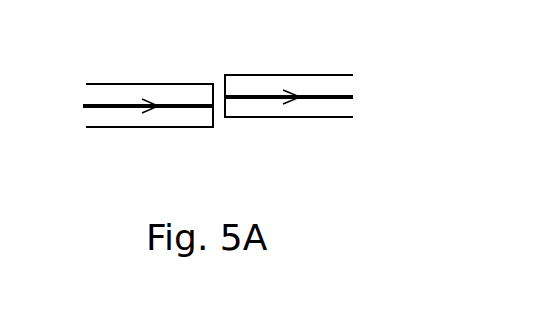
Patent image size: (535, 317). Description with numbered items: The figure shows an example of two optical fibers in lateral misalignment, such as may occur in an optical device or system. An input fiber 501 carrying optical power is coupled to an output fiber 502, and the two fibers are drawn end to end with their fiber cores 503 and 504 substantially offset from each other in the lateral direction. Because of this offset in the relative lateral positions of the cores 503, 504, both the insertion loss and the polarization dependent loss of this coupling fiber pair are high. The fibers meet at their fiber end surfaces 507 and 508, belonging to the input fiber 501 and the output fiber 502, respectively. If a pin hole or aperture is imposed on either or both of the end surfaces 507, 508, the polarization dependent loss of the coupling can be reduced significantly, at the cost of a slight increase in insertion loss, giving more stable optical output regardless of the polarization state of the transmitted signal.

The input fiber 501 is at (93, 82).
The output fiber 502 is at (277, 73).
The fiber core 503 is at (173, 102).
The fiber core 504 is at (326, 93).
The fiber end surface 507 is at (215, 86).
The fiber end surface 508 is at (224, 115).